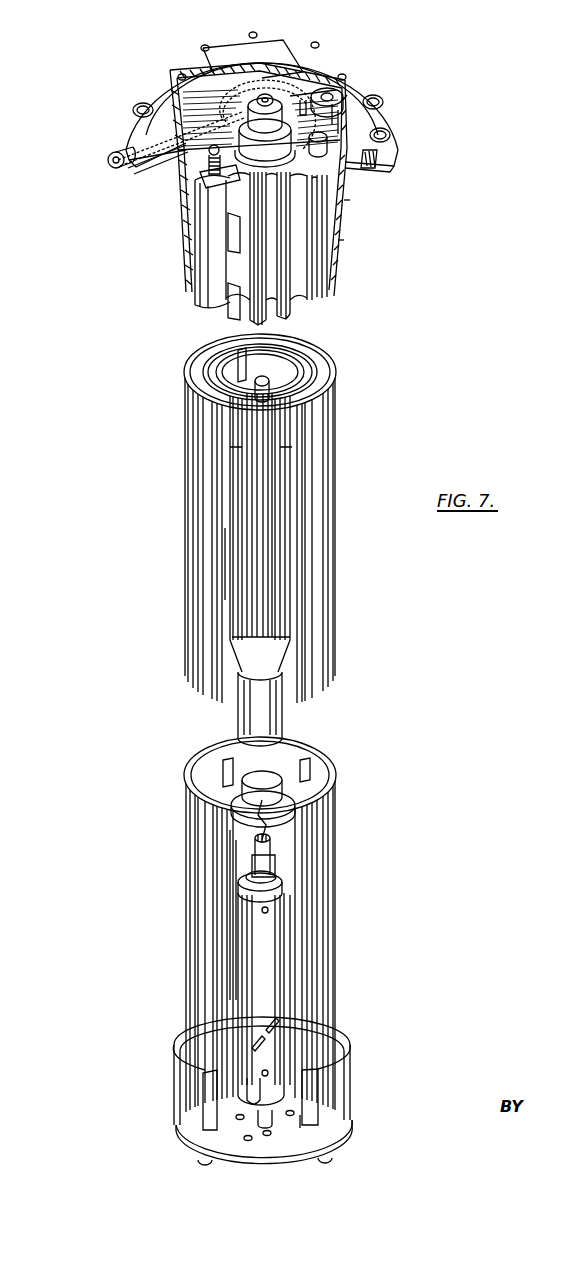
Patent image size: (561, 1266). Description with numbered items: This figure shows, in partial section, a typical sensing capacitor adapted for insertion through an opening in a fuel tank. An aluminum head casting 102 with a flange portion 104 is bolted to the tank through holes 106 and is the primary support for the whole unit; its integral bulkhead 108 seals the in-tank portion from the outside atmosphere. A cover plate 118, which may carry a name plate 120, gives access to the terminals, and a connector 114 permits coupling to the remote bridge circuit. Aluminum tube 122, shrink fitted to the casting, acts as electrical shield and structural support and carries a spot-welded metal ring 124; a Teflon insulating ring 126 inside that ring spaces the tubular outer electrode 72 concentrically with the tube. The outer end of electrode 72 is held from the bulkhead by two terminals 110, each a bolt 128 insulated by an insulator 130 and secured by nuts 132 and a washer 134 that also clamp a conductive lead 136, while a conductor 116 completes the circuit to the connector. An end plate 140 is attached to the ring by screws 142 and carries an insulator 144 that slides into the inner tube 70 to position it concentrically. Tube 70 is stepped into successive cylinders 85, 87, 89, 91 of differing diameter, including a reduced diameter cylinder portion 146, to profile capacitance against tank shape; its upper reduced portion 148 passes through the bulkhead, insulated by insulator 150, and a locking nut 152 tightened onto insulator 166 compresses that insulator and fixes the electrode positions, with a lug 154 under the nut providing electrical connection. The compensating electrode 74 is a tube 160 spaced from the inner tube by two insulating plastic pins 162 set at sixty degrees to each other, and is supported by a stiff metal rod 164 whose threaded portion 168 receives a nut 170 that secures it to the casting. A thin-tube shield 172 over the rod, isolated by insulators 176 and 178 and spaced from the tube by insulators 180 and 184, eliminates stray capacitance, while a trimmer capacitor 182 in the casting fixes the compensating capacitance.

The inner tube 70 is at (246, 1082).
The outer electrode 72 is at (302, 967).
The compensating electrode 74 is at (272, 912).
The cylinder 85 is at (292, 800).
The cylinder 87 is at (287, 722).
The cylinder 89 is at (296, 472).
The cylinder 91 is at (294, 412).
The head casting 102 is at (192, 55).
The flange portion 104 is at (395, 118).
The holes 106 is at (398, 145).
The bulkhead 108 is at (352, 183).
The terminals 110 is at (226, 96).
The connector 114 is at (116, 151).
The conductor 116 is at (148, 118).
The cover plate 118 is at (307, 45).
The name plate 120 is at (246, 54).
The aluminum tube 122 is at (318, 434).
The metal ring 124 is at (335, 1082).
The insulating ring 126 is at (300, 1128).
The bolt 128 is at (236, 140).
The insulator 130 is at (238, 212).
The nuts 132 is at (240, 152).
The washer 134 is at (272, 182).
The conductive lead 136 is at (255, 165).
The end plate 140 is at (283, 1157).
The screws 142 is at (206, 1158).
The insulator 144 is at (258, 1138).
The reduced diameter cylinder portion 146 is at (285, 705).
The reduced portion 148 is at (232, 255).
The insulator 150 is at (346, 210).
The locking nut 152 is at (345, 108).
The lug 154 is at (350, 120).
The tube 160 is at (272, 938).
The insulating plastic pins 162 is at (274, 1020).
The metal rod 164 is at (272, 847).
The insulator 166 is at (385, 137).
The threaded portion 168 is at (320, 88).
The nut 170 is at (322, 93).
The shield 172 is at (248, 868).
The insulator 176 is at (238, 890).
The insulator 178 is at (248, 108).
The insulator 180 is at (230, 118).
The trimmer capacitor 182 is at (340, 96).
The insulator 184 is at (343, 232).